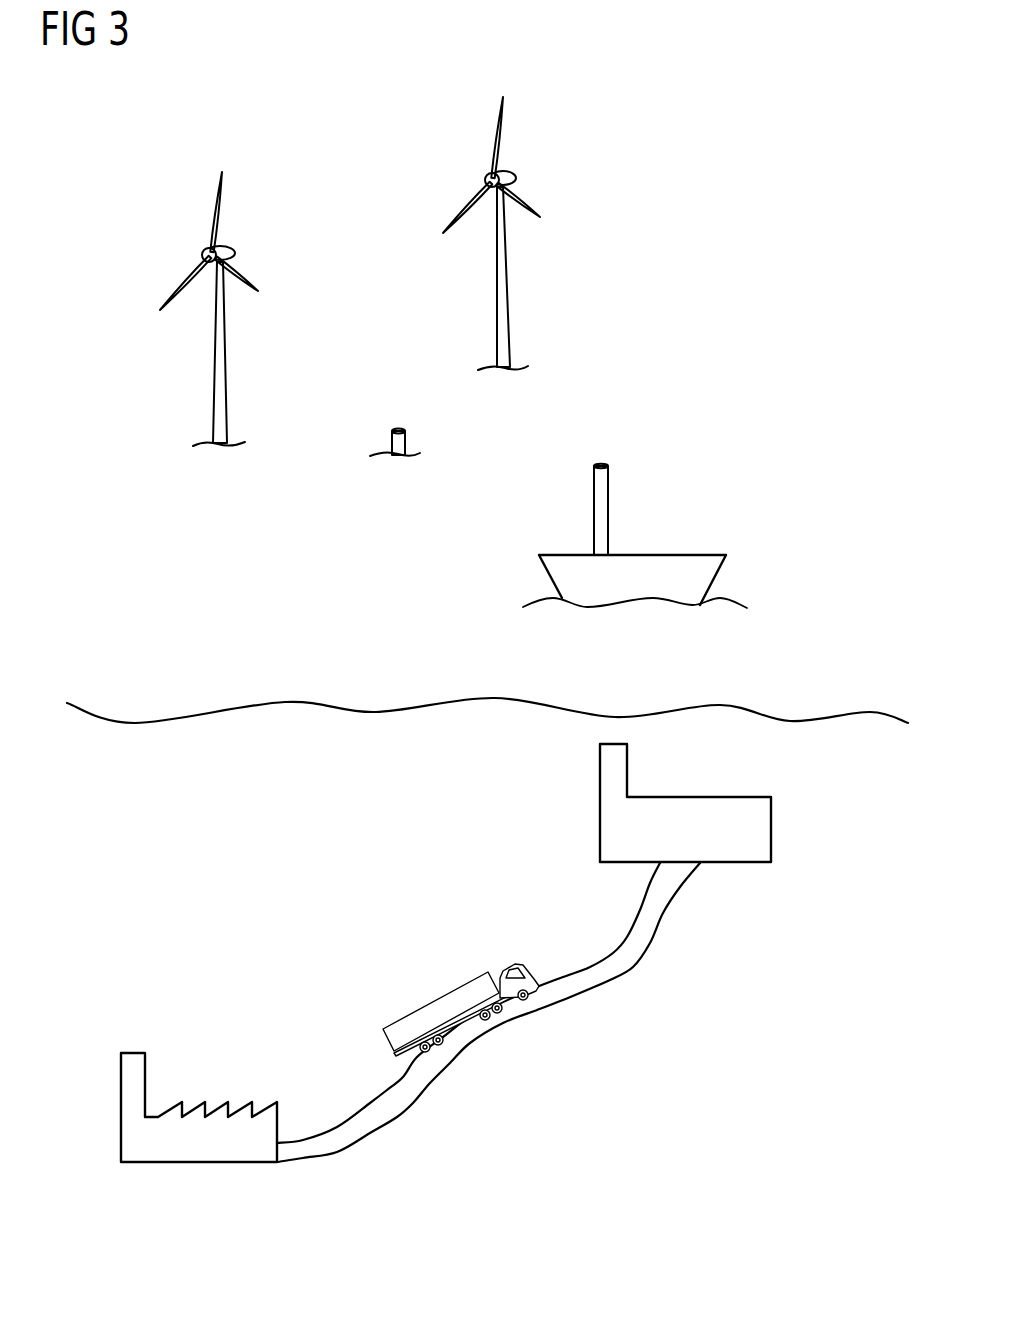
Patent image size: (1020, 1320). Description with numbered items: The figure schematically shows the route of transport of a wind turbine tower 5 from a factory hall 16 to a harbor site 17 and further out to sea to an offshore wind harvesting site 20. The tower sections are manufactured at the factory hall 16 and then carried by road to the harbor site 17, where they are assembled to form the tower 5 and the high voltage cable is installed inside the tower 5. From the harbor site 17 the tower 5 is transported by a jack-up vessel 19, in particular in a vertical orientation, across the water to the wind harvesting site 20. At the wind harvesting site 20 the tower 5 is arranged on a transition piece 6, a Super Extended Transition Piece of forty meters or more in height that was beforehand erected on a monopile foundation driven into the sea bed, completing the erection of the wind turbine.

The wind harvesting site 20 is at (298, 141).
The transition piece 6 is at (395, 428).
The tower 5 is at (603, 506).
The jack-up vessel 19 is at (658, 536).
The harbor site 17 is at (772, 824).
The factory hall 16 is at (121, 1131).